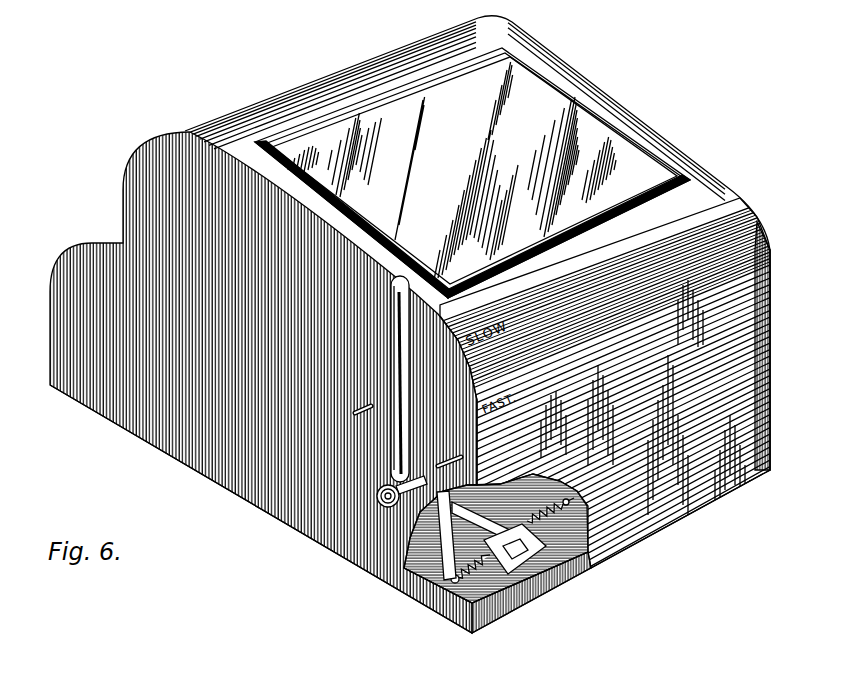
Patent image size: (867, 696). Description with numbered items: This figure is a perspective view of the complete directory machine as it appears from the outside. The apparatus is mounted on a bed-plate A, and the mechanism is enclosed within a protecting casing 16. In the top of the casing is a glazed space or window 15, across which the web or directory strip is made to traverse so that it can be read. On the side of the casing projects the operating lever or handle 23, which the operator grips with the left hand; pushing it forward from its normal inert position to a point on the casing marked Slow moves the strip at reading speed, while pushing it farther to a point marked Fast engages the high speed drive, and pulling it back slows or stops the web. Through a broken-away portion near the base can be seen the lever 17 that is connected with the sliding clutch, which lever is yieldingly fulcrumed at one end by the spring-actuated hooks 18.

The glazed space or window 15 is at (472, 173).
The protecting casing 16 is at (355, 547).
The lever 17 is at (457, 535).
The spring-actuated hooks 18 is at (512, 548).
The operating lever or handle 23 is at (402, 391).
The bed-plate A is at (450, 612).